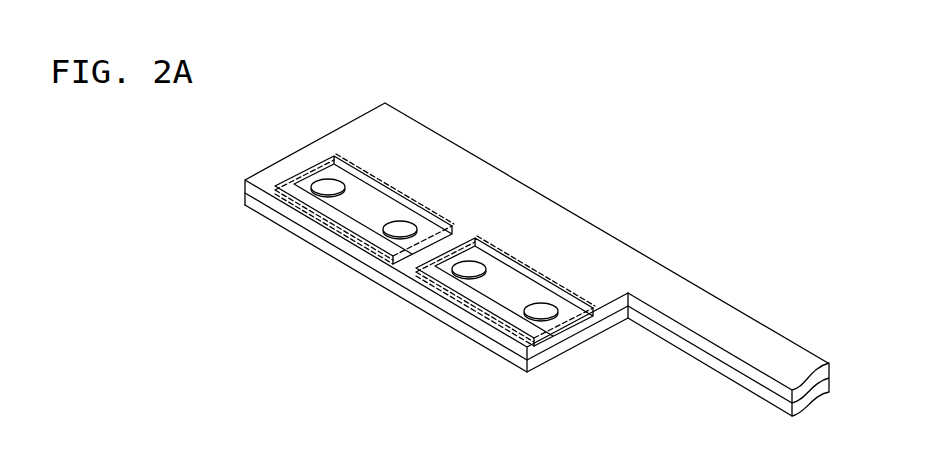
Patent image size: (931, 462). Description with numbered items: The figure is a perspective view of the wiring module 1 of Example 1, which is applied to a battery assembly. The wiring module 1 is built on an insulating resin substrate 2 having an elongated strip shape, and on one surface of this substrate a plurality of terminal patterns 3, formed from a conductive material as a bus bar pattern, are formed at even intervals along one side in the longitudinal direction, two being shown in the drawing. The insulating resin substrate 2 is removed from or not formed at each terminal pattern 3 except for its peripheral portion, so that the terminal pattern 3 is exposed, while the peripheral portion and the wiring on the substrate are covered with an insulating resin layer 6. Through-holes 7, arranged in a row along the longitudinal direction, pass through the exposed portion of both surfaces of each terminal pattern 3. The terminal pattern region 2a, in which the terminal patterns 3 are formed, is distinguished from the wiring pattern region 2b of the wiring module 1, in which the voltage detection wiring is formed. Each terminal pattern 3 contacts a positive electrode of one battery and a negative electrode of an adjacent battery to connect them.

The wiring module 1 is at (506, 257).
The insulating resin substrate 2 is at (506, 259).
The terminal pattern region 2a is at (552, 356).
The wiring pattern region 2b is at (733, 326).
The terminal pattern 3 is at (352, 208).
The insulating resin layer 6 is at (242, 200).
The through-hole 7 is at (328, 182).